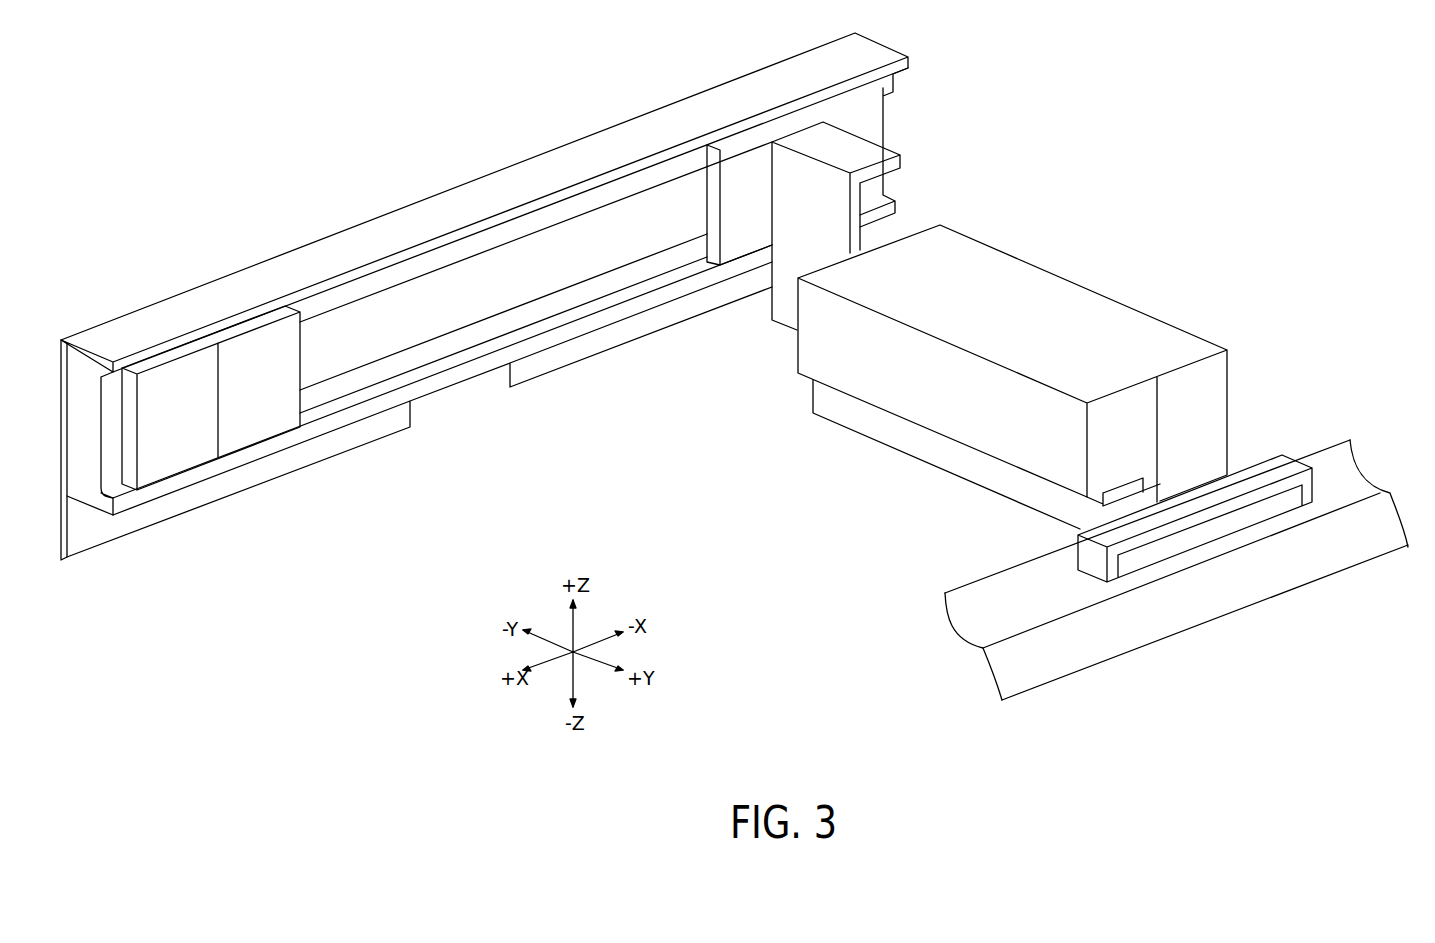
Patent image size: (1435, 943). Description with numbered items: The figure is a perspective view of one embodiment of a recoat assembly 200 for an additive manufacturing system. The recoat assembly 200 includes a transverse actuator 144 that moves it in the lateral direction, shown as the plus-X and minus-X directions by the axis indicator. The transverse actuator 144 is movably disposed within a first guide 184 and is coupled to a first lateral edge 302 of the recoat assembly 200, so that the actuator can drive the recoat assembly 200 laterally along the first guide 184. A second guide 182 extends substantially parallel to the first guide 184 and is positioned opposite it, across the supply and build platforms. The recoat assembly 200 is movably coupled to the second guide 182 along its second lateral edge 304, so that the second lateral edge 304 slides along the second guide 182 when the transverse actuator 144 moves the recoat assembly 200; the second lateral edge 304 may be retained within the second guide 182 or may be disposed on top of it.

The transverse actuator 144 is at (728, 273).
The first guide 184 is at (420, 332).
The recoat assembly 200 is at (1135, 235).
The first lateral edge 302 is at (857, 253).
The second lateral edge 304 is at (1212, 480).
The second guide 182 is at (992, 590).